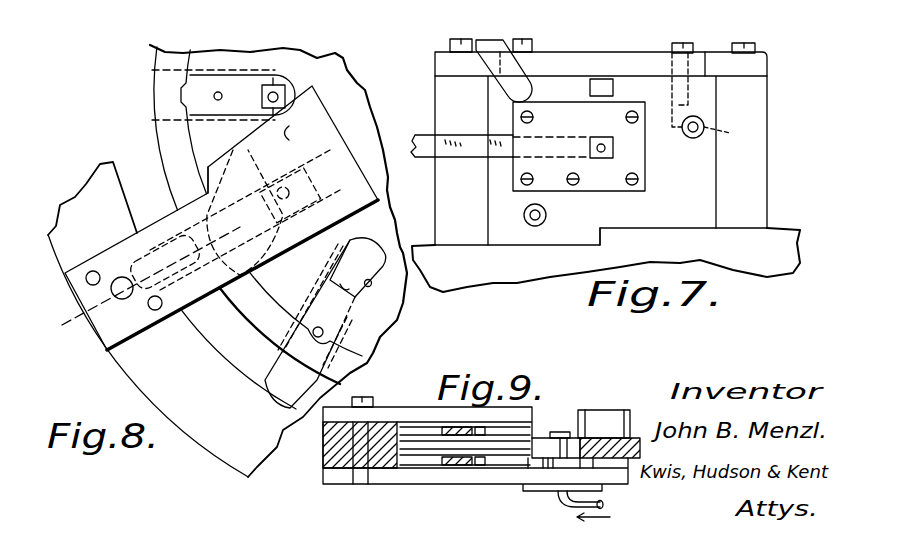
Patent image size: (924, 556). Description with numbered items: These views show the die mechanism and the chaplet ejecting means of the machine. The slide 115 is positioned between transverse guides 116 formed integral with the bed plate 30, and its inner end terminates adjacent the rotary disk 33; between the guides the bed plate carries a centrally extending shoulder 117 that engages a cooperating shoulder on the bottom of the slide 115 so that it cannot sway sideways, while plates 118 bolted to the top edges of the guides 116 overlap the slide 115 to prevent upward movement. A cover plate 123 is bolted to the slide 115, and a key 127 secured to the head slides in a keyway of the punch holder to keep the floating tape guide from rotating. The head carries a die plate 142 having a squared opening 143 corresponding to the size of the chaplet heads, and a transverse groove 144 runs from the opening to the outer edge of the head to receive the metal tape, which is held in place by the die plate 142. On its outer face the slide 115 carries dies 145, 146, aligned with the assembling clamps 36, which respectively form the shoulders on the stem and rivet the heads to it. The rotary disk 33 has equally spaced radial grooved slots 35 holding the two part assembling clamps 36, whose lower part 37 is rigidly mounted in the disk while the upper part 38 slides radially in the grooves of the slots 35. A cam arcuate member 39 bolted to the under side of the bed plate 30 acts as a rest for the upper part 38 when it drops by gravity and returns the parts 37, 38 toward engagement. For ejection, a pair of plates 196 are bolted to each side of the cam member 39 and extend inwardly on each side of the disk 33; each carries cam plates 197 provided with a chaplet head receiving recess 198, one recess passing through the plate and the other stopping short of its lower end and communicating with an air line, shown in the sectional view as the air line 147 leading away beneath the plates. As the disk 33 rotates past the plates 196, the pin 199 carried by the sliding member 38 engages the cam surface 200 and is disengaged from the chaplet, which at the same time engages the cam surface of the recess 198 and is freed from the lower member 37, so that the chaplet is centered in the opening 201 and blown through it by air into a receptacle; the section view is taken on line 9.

In FIG. 7, the bed plate 30 is at (606, 260).
In FIG. 8, the rotary disk 33 is at (192, 135).
In FIG. 8, the grooved slots 35 is at (371, 285).
In FIG. 9, the grooved slots 35 is at (597, 438).
In FIG. 8, the assembling clamps 36 is at (247, 90).
In FIG. 8, the lower part of assembling clamp 37 is at (368, 245).
In FIG. 8, the upper part of assembling clamp 38 is at (337, 322).
In FIG. 8, the cam arcuate member 39 is at (205, 356).
In FIG. 9, the cam arcuate member 39 is at (323, 463).
In FIG. 8, the section line 9- 9 is at (369, 143).
In FIG. 7, the slide 115 is at (700, 193).
In FIG. 7, the transverse guides 116 is at (750, 208).
In FIG. 7, the shoulder 117 is at (600, 238).
In FIG. 7, the plates 118 is at (757, 70).
In FIG. 7, the cover plate 123 is at (563, 63).
In FIG. 7, the key 127 is at (600, 84).
In FIG. 7, the die plate 142 is at (613, 180).
In FIG. 7, the squared opening 143 is at (613, 152).
In FIG. 7, the transverse groove 144 is at (533, 148).
In FIG. 7, the die 145 is at (706, 128).
In FIG. 7, the die 146 is at (533, 227).
In FIG. 9, the outlet tube 147 is at (505, 465).
In FIG. 8, the plates 196 is at (220, 218).
In FIG. 9, the plates 196 is at (403, 407).
In FIG. 8, the cam plates 197 is at (312, 86).
In FIG. 9, the cam plates 197 is at (585, 428).
In FIG. 8, the chaplet head receiving recess 198 is at (297, 122).
In FIG. 8, the pin 199 is at (218, 92).
In FIG. 8, the cam surface 200 is at (222, 187).
In FIG. 9, the opening 201 is at (553, 421).